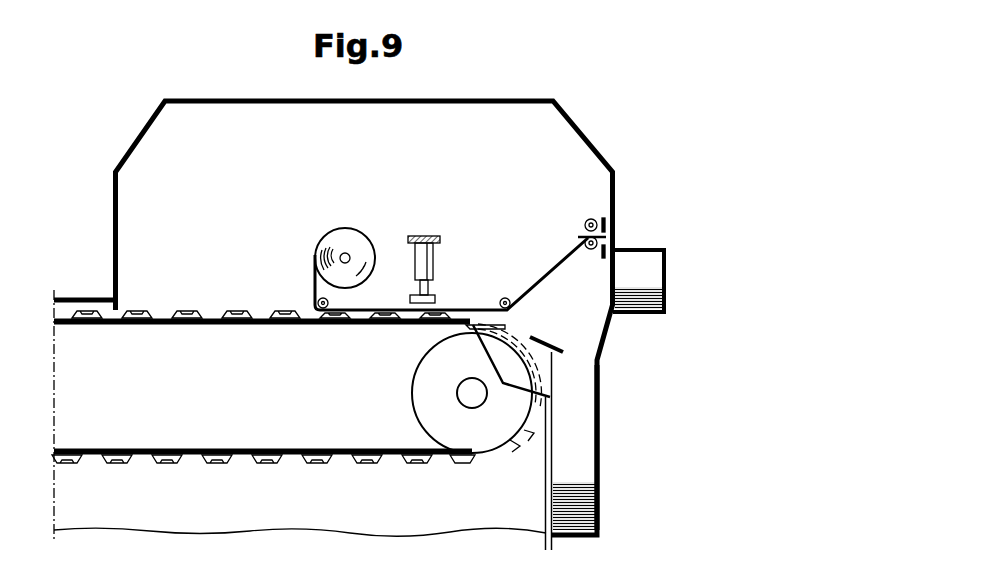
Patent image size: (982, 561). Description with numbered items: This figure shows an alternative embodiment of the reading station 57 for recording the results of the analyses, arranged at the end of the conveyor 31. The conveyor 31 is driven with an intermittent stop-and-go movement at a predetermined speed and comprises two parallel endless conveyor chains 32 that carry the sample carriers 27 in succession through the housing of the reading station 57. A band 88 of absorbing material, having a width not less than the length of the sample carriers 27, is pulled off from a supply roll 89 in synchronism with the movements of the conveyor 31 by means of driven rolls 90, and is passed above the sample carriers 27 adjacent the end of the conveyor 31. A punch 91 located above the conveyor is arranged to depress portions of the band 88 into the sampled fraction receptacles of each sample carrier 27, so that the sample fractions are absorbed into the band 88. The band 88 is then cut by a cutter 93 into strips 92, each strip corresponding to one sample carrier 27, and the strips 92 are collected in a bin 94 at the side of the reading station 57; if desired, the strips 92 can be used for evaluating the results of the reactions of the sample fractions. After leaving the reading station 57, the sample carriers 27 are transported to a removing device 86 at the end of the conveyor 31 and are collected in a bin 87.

The reading station 57 is at (128, 133).
The sample carrier 27 is at (287, 317).
The conveyor 31 is at (200, 505).
The endless conveyor chains 32 is at (219, 326).
The removing device 86 is at (545, 383).
The bin 87 is at (599, 443).
The band 88 is at (316, 290).
The supply roll 89 is at (334, 239).
The driven rolls 90 is at (585, 240).
The punch 91 is at (432, 297).
The strips 92 is at (641, 288).
The cutter 93 is at (614, 223).
The bin 94 is at (661, 250).